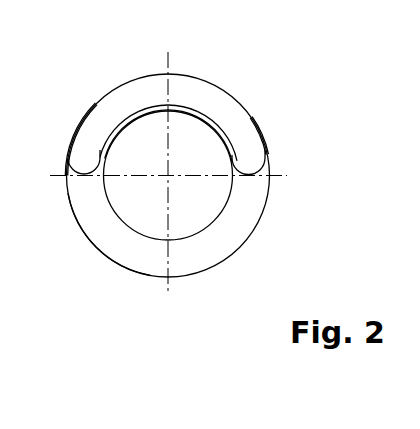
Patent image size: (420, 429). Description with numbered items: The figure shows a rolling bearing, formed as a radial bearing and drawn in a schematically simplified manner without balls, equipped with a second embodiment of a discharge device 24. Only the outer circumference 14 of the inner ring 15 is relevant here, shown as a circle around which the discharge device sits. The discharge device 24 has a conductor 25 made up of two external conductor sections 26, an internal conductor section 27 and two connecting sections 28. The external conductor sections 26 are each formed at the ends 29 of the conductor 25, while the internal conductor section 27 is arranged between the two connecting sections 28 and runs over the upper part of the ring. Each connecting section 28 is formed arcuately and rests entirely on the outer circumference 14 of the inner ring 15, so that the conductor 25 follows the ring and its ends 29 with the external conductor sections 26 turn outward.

The discharge device 24 is at (80, 75).
The outer circumference 14 is at (135, 271).
The inner ring 15 is at (100, 251).
The conductor 25 is at (196, 109).
The internal conductor section 27 is at (156, 107).
The ends 29 is at (261, 117).
The external conductor sections 26 is at (264, 138).
The connecting sections 28 is at (253, 177).